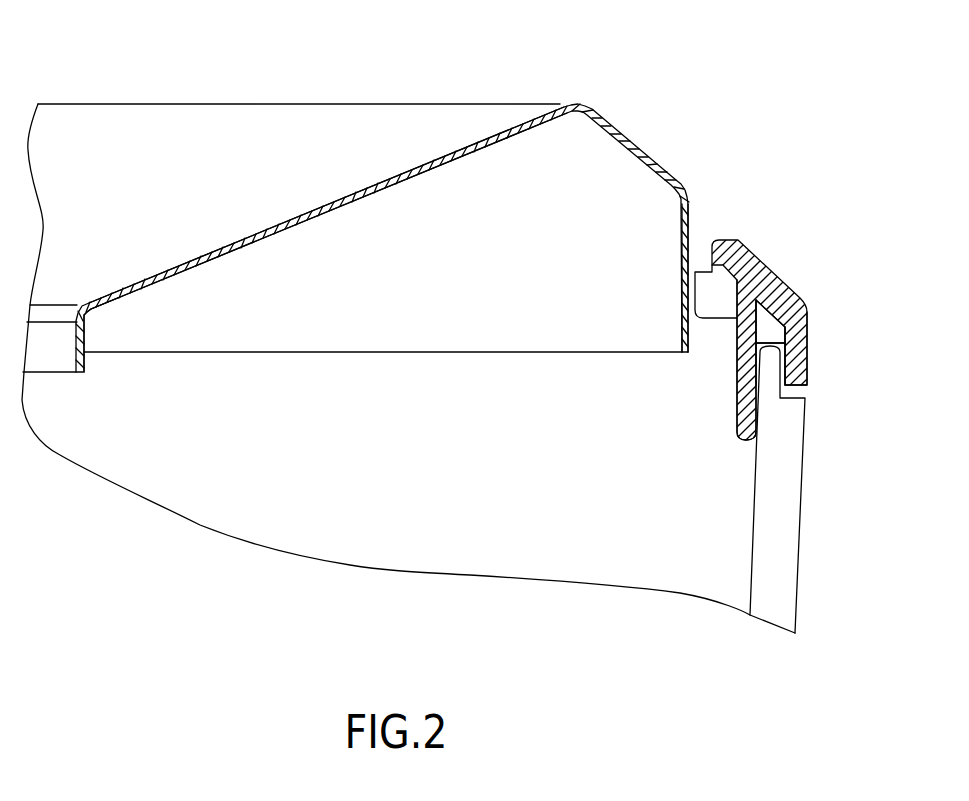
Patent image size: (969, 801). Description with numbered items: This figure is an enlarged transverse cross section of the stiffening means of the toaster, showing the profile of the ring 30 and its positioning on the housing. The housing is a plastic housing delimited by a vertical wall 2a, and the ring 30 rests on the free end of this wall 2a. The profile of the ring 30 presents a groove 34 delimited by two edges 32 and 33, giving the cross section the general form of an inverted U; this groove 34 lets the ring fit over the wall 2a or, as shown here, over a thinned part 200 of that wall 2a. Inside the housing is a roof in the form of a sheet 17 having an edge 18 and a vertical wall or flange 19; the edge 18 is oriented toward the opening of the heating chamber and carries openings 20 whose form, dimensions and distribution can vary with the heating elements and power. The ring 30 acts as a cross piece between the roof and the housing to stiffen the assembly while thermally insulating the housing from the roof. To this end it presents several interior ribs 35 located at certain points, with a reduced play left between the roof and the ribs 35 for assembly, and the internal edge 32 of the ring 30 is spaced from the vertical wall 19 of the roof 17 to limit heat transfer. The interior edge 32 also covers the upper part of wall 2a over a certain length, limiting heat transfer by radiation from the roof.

The sheet 17 is at (646, 124).
The edge 18 is at (120, 292).
The vertical wall 19 is at (680, 243).
The openings 20 is at (473, 142).
The ring 30 is at (743, 228).
The internal edge 32 is at (737, 402).
The edge 33 is at (800, 357).
The groove 34 is at (768, 326).
The interior ribs 35 is at (703, 290).
The thinned part 200 is at (770, 368).
The vertical wall 2a is at (783, 494).